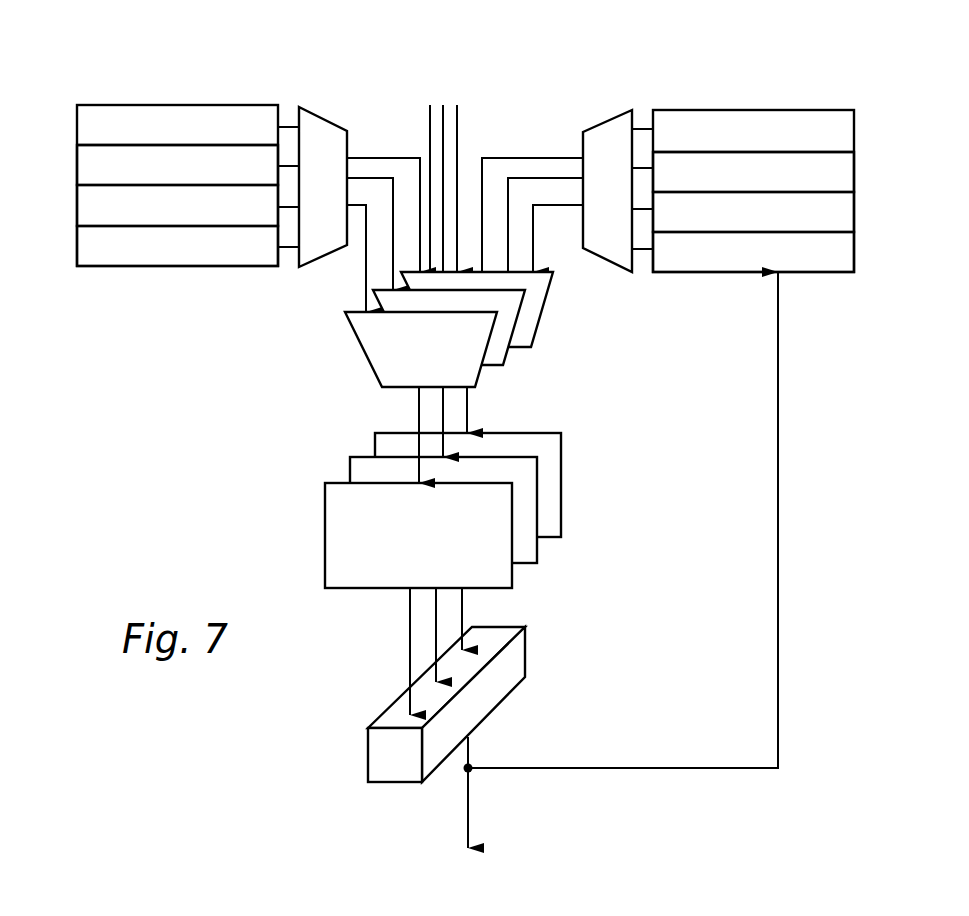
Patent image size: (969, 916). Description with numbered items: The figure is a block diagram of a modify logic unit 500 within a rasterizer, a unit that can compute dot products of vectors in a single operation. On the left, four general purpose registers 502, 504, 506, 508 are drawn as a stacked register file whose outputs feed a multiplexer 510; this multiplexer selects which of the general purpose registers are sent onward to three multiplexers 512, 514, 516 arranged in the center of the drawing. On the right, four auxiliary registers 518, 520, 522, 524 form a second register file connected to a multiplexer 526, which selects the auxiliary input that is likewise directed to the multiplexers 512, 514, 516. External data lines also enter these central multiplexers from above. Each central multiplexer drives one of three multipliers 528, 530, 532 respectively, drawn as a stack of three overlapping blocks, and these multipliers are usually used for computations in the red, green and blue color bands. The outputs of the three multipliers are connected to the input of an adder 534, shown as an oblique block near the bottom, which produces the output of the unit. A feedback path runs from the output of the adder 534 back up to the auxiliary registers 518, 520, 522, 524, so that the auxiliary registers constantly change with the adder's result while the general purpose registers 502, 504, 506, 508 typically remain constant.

The modify logic unit 500 is at (584, 31).
The general purpose register 502 is at (153, 183).
The general purpose register 504 is at (77, 167).
The general purpose register 506 is at (77, 208).
The general purpose register 508 is at (100, 266).
The multiplexer 510 is at (340, 122).
The multiplexer 512 is at (367, 353).
The multiplexer 514 is at (502, 358).
The multiplexer 516 is at (549, 305).
The auxiliary register 518 is at (780, 196).
The auxiliary register 520 is at (883, 160).
The auxiliary register 522 is at (854, 212).
The auxiliary register 524 is at (727, 272).
The multiplexer 526 is at (610, 112).
The multiplier 528 is at (512, 578).
The multiplier 530 is at (537, 548).
The multiplier 532 is at (561, 510).
The adder 534 is at (507, 697).